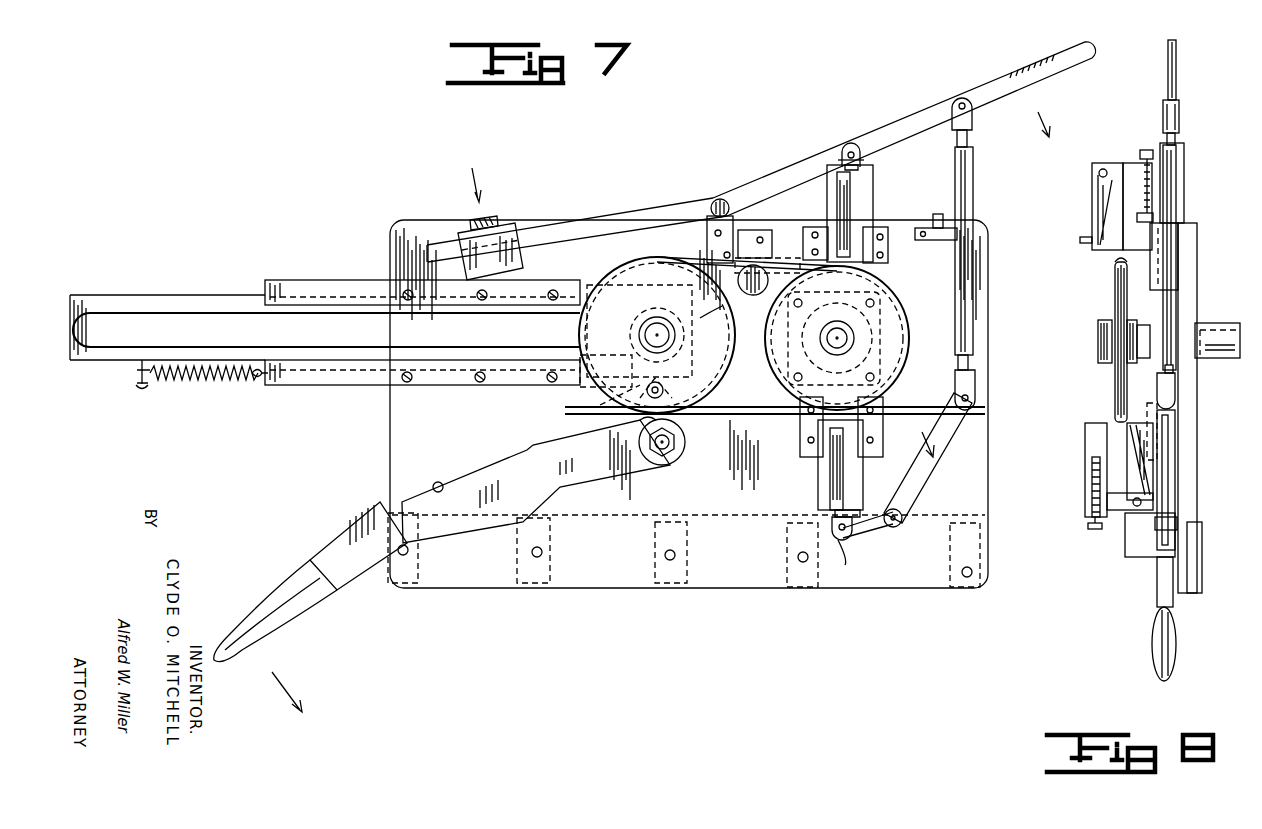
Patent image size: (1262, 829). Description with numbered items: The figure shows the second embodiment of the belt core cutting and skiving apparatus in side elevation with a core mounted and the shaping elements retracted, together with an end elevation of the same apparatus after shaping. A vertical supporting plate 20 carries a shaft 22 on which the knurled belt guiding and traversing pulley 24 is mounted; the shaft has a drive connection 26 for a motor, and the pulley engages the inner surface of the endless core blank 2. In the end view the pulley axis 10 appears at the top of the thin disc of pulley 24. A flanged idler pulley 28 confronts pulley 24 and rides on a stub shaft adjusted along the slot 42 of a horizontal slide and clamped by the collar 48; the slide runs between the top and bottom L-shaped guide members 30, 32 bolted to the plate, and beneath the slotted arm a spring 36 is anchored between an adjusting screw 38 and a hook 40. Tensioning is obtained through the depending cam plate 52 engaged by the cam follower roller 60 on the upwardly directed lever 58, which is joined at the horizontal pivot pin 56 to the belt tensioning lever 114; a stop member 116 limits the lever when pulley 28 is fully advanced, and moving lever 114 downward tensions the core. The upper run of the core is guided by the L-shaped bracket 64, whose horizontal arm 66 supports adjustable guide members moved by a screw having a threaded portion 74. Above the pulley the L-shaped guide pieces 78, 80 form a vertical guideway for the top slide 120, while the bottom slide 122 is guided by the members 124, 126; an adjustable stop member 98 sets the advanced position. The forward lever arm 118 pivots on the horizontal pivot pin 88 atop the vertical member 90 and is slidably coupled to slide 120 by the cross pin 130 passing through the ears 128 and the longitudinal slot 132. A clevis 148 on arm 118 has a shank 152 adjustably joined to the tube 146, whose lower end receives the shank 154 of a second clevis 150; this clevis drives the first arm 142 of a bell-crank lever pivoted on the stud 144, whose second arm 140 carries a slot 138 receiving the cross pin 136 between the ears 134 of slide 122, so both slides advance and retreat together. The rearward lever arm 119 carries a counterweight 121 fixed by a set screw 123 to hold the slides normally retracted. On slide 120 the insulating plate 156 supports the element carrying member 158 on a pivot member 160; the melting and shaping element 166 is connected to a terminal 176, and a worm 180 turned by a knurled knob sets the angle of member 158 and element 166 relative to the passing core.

In FIG. 7, the endless core blank 2 is at (735, 415).
In FIG. 8, the pulley shaft 10 is at (1115, 258).
In FIG. 7, the vertical supporting plate 20 is at (600, 588).
In FIG. 8, the vertical supporting plate 20 is at (1197, 445).
In FIG. 7, the shaft 22 is at (837, 348).
In FIG. 8, the shaft 22 is at (1098, 343).
In FIG. 7, the belt guiding and traversing pulley 24 is at (885, 300).
In FIG. 8, the belt guiding and traversing pulley 24 is at (1112, 290).
In FIG. 8, the drive connection 26 is at (1225, 322).
In FIG. 7, the flanged idler pulley 28 is at (712, 375).
In FIG. 7, the top L-shaped guide member 30 is at (340, 282).
In FIG. 7, the bottom L-shaped guide member 32 is at (440, 388).
In FIG. 7, the spring 36 is at (192, 385).
In FIG. 7, the adjusting screw 38 is at (142, 392).
In FIG. 7, the spring hook 40 is at (258, 385).
In FIG. 7, the slot 42 is at (170, 295).
In FIG. 7, the nut or collar 48 is at (638, 335).
In FIG. 7, the cam plate 52 is at (605, 405).
In FIG. 7, the horizontal pivot pin 56 is at (670, 460).
In FIG. 7, the cam roller carrying lever 58 is at (640, 450).
In FIG. 7, the cam follower roller 60 is at (640, 424).
In FIG. 7, the L-shaped supporting bracket 64 is at (756, 230).
In FIG. 7, the horizontal arm 66 is at (711, 316).
In FIG. 7, the threaded portion 74 is at (755, 295).
In FIG. 7, the L-shaped guide piece 78 is at (888, 268).
In FIG. 7, the L-shaped guide piece 80 is at (803, 240).
In FIG. 7, the horizontal pivot pin 88 is at (722, 199).
In FIG. 7, the vertical member 90 is at (707, 242).
In FIG. 7, the adjustable stop member 98 is at (945, 215).
In FIG. 7, the belt tensioning lever 114 is at (483, 482).
In FIG. 8, the belt tensioning lever 114 is at (1164, 619).
In FIG. 7, the stop member 116 is at (437, 482).
In FIG. 7, the forward lever arm 118 is at (1000, 80).
In FIG. 8, the forward lever arm 118 is at (1180, 75).
In FIG. 7, the rearwardly directed lever arm 119 is at (660, 205).
In FIG. 7, the top slide 120 is at (873, 210).
In FIG. 8, the top slide 120 is at (1185, 175).
In FIG. 7, the counterweight 121 is at (523, 263).
In FIG. 7, the bottom slide 122 is at (850, 470).
In FIG. 7, the set screw 123 is at (490, 218).
In FIG. 7, the guideway forming member 124 is at (800, 460).
In FIG. 7, the guideway forming member 126 is at (883, 445).
In FIG. 7, the upstanding parallel ears 128 is at (862, 168).
In FIG. 7, the cross pin 130 is at (850, 145).
In FIG. 7, the longitudinal slot 132 is at (845, 158).
In FIG. 7, the vertical parallel ears 134 is at (832, 528).
In FIG. 8, the vertical parallel ears 134 is at (1145, 550).
In FIG. 7, the cross pin 136 is at (852, 562).
In FIG. 7, the slot 138 is at (860, 513).
In FIG. 7, the second arm 140 is at (860, 535).
In FIG. 7, the first arm 142 is at (930, 480).
In FIG. 8, the first arm 142 is at (1175, 480).
In FIG. 7, the horizontal stud 144 is at (898, 527).
In FIG. 7, the tube 146 is at (975, 270).
In FIG. 8, the tube 146 is at (1178, 195).
In FIG. 7, the clevis 148 is at (975, 125).
In FIG. 8, the clevis 148 is at (1182, 120).
In FIG. 7, the second clevis 150 is at (978, 390).
In FIG. 8, the second clevis 150 is at (1178, 392).
In FIG. 7, the shank 152 is at (970, 147).
In FIG. 8, the shank 152 is at (1163, 138).
In FIG. 7, the shank 154 is at (975, 360).
In FIG. 8, the shank 154 is at (1180, 367).
In FIG. 8, the electrically insulating plate 156 is at (1085, 450).
In FIG. 8, the melting and shaping element carrying member 158 is at (1090, 210).
In FIG. 8, the pivot member 160 is at (1135, 505).
In FIG. 8, the melting and shaping element 166 is at (1120, 450).
In FIG. 8, the terminal 176 is at (1080, 240).
In FIG. 8, the worm 180 is at (1090, 490).